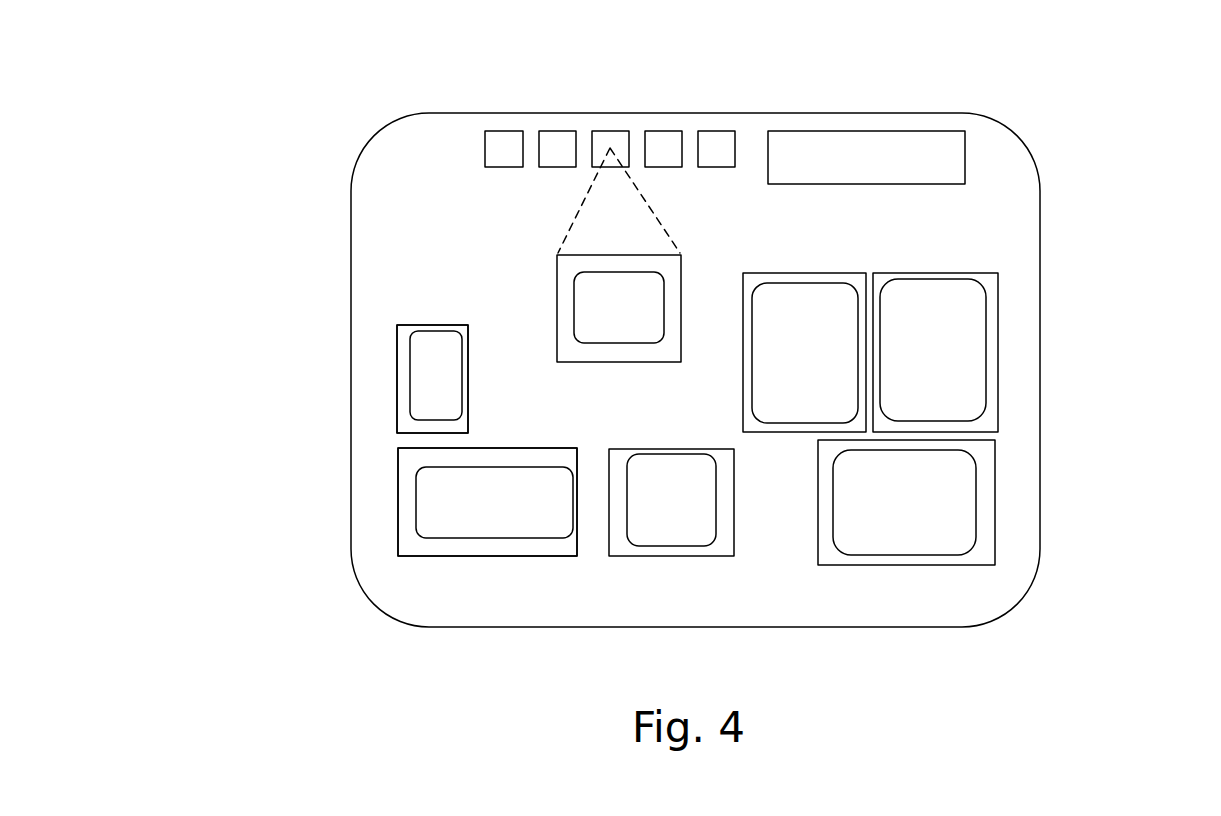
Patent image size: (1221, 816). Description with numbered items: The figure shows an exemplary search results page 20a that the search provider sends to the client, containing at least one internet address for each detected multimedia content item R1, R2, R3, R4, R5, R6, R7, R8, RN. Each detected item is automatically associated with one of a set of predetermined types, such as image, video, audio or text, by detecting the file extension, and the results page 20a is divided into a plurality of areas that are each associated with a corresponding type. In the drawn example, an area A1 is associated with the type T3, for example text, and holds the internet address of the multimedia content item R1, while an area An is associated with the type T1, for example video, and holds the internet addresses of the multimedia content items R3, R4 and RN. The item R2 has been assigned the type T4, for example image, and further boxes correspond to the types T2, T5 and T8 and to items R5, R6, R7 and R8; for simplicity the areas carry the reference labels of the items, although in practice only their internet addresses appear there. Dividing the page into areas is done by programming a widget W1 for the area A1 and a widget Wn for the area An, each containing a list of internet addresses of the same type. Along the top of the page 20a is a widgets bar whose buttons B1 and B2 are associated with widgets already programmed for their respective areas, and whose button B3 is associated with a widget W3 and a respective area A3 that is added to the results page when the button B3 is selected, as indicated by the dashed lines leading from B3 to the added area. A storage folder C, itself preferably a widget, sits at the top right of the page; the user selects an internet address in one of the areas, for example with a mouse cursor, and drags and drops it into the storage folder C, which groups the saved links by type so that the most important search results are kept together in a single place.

The results page 20a is at (349, 226).
The button B1 is at (505, 148).
The button B2 is at (557, 148).
The button B3 is at (608, 132).
The storage folder C is at (948, 147).
The area A3 is at (875, 269).
The widget W3 is at (664, 307).
The area A1 is at (351, 367).
The type T3 is at (397, 378).
The widget W1 is at (356, 379).
The area An is at (388, 570).
The widget Wn is at (494, 580).
The type T1 is at (415, 538).
The type T4 is at (745, 624).
The type T5 is at (819, 484).
The type T8 is at (1027, 352).
The type T2 is at (947, 575).
The multimedia content item R1 is at (413, 407).
The multimedia content item R2 is at (700, 557).
The multimedia content item R3 is at (494, 502).
The multimedia content item R4 is at (494, 502).
The multimedia content item R5 is at (947, 538).
The multimedia content item R6 is at (805, 353).
The multimedia content item R7 is at (772, 430).
The multimedia content item R8 is at (998, 378).
The multimedia content item RN is at (468, 538).